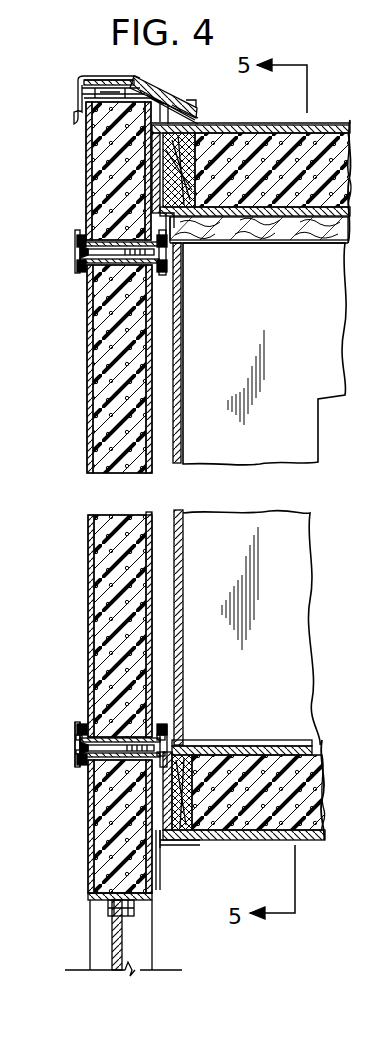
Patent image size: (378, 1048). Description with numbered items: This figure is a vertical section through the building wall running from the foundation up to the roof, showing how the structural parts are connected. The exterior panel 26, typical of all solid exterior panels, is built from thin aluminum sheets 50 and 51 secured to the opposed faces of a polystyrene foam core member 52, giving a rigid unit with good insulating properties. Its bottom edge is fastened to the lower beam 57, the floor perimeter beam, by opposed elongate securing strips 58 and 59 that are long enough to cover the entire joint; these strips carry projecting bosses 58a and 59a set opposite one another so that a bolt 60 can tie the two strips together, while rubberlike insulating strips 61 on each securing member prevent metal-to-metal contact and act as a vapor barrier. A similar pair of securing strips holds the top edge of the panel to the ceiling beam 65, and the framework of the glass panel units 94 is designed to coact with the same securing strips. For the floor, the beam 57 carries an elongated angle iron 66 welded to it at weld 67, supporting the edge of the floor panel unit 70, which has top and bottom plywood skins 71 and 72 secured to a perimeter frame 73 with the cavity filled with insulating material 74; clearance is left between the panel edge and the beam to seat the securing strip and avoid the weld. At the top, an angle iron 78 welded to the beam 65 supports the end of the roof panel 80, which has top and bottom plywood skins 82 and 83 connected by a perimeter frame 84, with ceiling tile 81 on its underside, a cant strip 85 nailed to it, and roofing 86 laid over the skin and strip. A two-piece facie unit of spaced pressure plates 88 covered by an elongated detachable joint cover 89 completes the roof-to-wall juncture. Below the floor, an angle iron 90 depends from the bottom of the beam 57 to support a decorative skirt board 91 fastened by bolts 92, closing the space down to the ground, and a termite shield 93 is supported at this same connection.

The exterior panel 26 is at (85, 430).
The aluminum sheet 50 is at (88, 545).
The aluminum sheet 51 is at (156, 525).
The polystyrene foam core member 52 is at (122, 515).
The lower beam 57 is at (88, 812).
The securing strip 58 is at (76, 268).
The projecting boss 58a is at (76, 240).
The securing strip 59 is at (181, 300).
The projecting boss 59a is at (167, 270).
The bolt 60 is at (76, 757).
The rubberlike insulating strip 61 is at (76, 736).
The ceiling beam 65 is at (86, 165).
The angle iron 66 is at (176, 848).
The weld 67 is at (162, 850).
The floor panel unit 70 is at (330, 784).
The top plywood skin 71 is at (320, 748).
The bottom plywood skin 72 is at (312, 840).
The perimeter frame 73 is at (200, 825).
The insulating material 74 is at (345, 176).
The angle iron 78 is at (180, 236).
The roof panel 80 is at (352, 140).
The ceiling tile 81 is at (318, 232).
The top plywood skin 82 is at (344, 123).
The bottom plywood skin 83 is at (348, 226).
The perimeter frame 84 is at (232, 207).
The cant strip 85 is at (190, 125).
The roofing 86 is at (281, 125).
The pressure plate 88 is at (90, 82).
The detachable joint cover 89 is at (98, 78).
The angle iron 90 is at (150, 898).
The decorative skirt board 91 is at (112, 948).
The bolt 92 is at (104, 902).
The termite shield 93 is at (154, 920).
The glass pane 94 is at (320, 392).